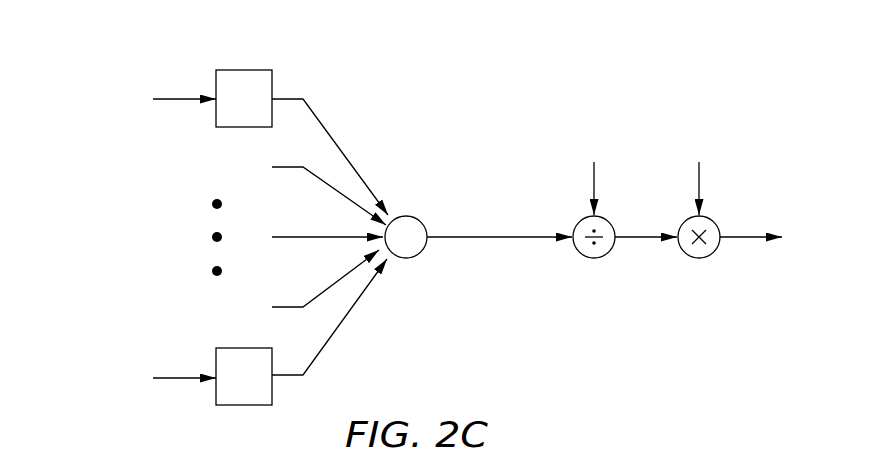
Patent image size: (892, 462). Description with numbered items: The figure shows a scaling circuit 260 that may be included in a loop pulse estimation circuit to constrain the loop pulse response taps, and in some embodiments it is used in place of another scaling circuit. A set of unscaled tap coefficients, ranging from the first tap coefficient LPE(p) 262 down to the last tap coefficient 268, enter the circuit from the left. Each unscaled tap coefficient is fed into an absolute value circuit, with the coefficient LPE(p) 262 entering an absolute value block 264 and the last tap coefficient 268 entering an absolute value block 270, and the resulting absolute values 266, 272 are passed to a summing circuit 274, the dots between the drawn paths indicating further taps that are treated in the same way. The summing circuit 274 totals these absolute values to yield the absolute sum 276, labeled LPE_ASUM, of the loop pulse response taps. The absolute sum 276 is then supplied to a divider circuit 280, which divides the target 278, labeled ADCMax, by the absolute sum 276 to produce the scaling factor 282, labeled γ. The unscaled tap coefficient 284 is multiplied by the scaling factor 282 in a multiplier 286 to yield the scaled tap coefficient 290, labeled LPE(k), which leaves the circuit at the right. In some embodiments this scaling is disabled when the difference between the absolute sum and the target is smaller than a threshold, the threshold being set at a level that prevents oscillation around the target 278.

The scaling circuit 260 is at (678, 70).
The unscaled tap coefficient LPE(p) 262 is at (172, 97).
The absolute value block 264 is at (264, 120).
The absolute value circuit 266 is at (293, 97).
The unscaled tap coefficient LPE(−m+1) 268 is at (172, 375).
The absolute value block 270 is at (264, 398).
The absolute value circuit 272 is at (293, 373).
The summing circuit 274 is at (406, 258).
The absolute sum LPE_ASUM 276 is at (490, 239).
The target ADCMax 278 is at (594, 178).
The divider circuit 280 is at (594, 258).
The scaling factor γ 282 is at (640, 239).
The unscaled tap coefficient 284 is at (699, 178).
The multiplier 286 is at (699, 258).
The scaled tap coefficient LPE(k) 290 is at (745, 239).